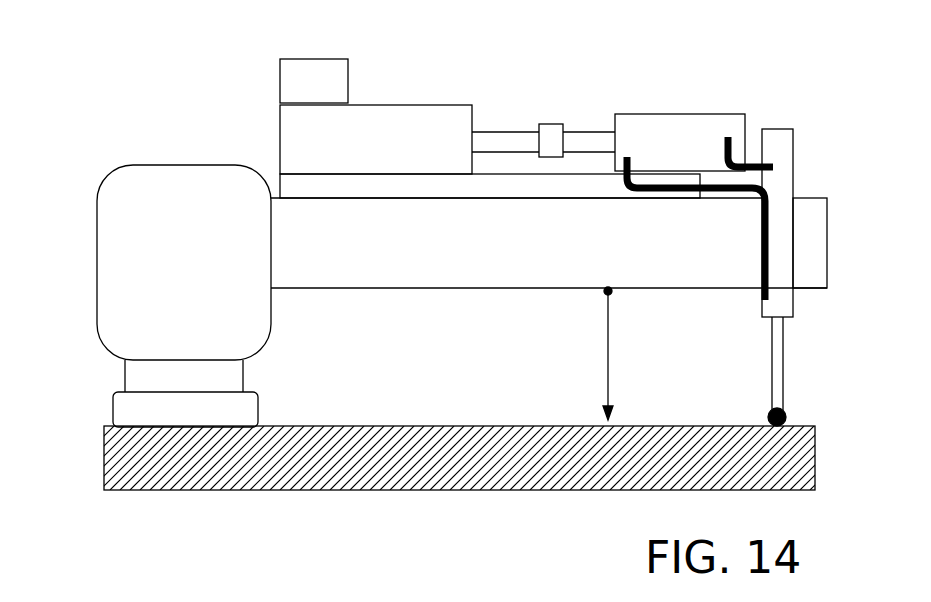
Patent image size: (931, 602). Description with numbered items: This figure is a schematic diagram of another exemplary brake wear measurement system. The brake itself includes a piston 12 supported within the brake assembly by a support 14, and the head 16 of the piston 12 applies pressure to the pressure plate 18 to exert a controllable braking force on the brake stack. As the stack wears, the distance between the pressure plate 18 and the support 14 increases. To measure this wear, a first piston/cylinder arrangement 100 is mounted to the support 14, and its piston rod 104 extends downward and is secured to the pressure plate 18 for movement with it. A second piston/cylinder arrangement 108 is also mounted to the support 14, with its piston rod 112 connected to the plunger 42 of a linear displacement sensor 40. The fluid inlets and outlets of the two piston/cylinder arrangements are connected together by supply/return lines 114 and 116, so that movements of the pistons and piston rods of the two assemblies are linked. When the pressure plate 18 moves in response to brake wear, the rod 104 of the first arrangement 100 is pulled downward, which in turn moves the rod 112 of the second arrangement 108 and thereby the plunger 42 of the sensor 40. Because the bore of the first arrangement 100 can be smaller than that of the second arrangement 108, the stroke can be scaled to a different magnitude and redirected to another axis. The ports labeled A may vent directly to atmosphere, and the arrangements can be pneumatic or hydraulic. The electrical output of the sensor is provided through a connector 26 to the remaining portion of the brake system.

The piston 12 is at (196, 284).
The support 14 is at (410, 258).
The head 16 is at (125, 412).
The pressure plate 18 is at (208, 462).
The connector 26 is at (313, 77).
The linear displacement sensor 40 is at (395, 128).
The plunger 42 is at (508, 140).
The piston rod 112 is at (580, 140).
The second piston/cylinder arrangement 108 is at (683, 130).
The supply/return line 114 is at (752, 162).
The first piston/cylinder arrangement 100 is at (785, 185).
The piston rod 104 is at (783, 348).
The supply/return line 116 is at (700, 198).